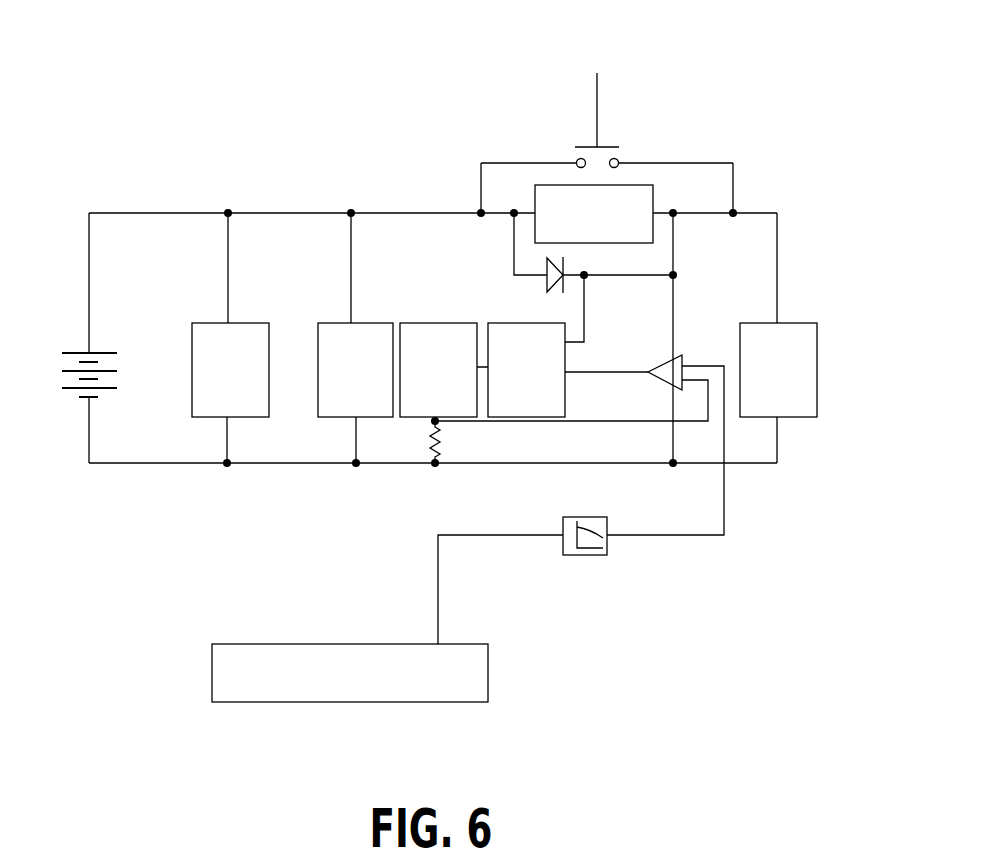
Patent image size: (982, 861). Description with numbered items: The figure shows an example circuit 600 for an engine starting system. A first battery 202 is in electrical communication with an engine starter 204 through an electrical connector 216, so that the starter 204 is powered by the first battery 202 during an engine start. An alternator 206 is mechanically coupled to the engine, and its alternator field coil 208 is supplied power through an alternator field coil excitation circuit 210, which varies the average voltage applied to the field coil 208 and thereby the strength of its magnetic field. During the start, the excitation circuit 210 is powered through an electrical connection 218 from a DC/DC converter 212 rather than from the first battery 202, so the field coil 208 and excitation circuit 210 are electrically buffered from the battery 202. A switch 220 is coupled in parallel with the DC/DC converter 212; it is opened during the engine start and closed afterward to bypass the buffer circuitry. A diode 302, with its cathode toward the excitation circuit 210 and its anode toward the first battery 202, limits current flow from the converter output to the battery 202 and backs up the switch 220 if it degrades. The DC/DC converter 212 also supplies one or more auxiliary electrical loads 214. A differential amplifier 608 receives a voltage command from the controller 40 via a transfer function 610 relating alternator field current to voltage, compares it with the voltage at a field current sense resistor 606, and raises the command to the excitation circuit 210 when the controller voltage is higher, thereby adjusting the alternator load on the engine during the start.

The circuit 600 is at (722, 41).
The electrical connector 216 is at (177, 213).
The first battery 202 is at (102, 350).
The switch 220 is at (598, 133).
The engine starter 204 is at (230, 338).
The alternator 206 is at (355, 338).
The alternator field coil 208 is at (444, 372).
The alternator field coil excitation circuit 210 is at (568, 370).
The DC/DC converter 212 is at (594, 214).
The auxiliary electrical loads 214 is at (778, 370).
The diode 302 is at (553, 288).
The electrical connection 218 is at (585, 306).
The field current sense resistor 606 is at (428, 440).
The differential amplifier 608 is at (681, 357).
The transfer function 610 is at (587, 517).
The controller 40 is at (350, 673).